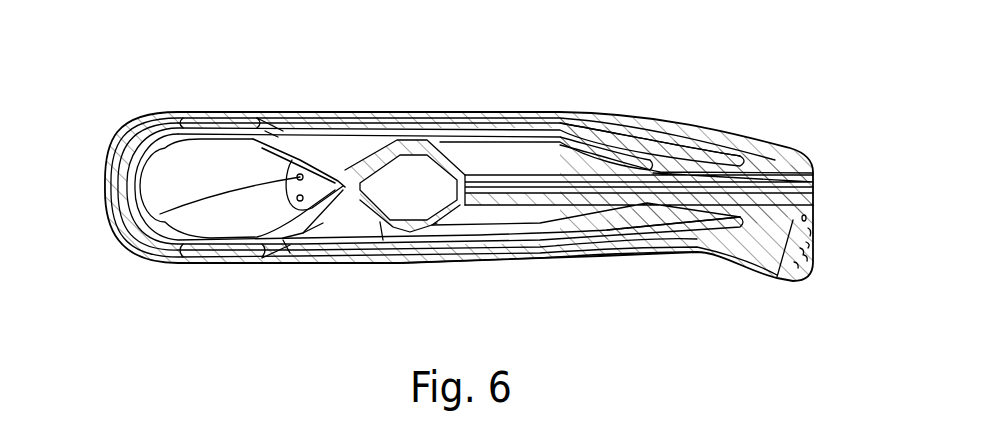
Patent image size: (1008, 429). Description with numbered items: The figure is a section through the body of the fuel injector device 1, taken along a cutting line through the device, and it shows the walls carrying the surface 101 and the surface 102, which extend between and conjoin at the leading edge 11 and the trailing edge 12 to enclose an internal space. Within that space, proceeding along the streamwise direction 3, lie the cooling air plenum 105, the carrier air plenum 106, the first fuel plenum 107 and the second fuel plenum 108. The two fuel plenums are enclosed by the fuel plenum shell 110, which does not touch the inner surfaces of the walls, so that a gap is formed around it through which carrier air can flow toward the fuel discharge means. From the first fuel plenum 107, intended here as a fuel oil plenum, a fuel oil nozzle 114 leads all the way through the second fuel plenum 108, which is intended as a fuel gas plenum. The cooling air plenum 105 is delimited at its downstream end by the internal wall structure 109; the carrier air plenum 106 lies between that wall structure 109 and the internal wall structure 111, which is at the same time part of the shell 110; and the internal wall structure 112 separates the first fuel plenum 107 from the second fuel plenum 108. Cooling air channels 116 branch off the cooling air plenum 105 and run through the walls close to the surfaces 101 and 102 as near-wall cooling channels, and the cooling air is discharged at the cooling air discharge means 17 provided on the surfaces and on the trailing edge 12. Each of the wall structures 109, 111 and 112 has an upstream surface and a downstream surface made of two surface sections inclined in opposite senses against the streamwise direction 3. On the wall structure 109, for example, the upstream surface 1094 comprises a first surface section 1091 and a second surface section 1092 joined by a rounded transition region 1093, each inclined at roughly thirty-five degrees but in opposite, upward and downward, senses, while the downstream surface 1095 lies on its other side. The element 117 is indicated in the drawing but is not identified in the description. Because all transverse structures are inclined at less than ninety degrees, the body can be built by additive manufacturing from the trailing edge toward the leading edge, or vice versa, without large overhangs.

The fuel injector device 1 is at (585, 73).
The streamwise direction 3 is at (152, 214).
The leading edge 11 is at (104, 185).
The trailing edge 12 is at (823, 210).
The cooling air discharge means 17 is at (263, 117).
The surface 101 is at (520, 112).
The surface 102 is at (420, 260).
The cooling air plenum 105 is at (245, 227).
The carrier air plenum 106 is at (371, 233).
The first fuel plenum 107 is at (428, 195).
The second fuel plenum 108 is at (520, 222).
The internal wall structure 109 is at (323, 226).
The fuel plenum shell 110 is at (627, 123).
The internal wall structure 111 is at (380, 222).
The internal wall structure 112 is at (437, 224).
The fuel oil nozzle 114 is at (595, 240).
The cooling air channels 116 is at (210, 127).
The rear wall 117 is at (517, 247).
The first surface section 1091 is at (287, 253).
The second surface section 1092 is at (310, 152).
The rounded transition region 1093 is at (352, 165).
The upstream surface 1094 is at (278, 157).
The downstream surface 1095 is at (352, 185).